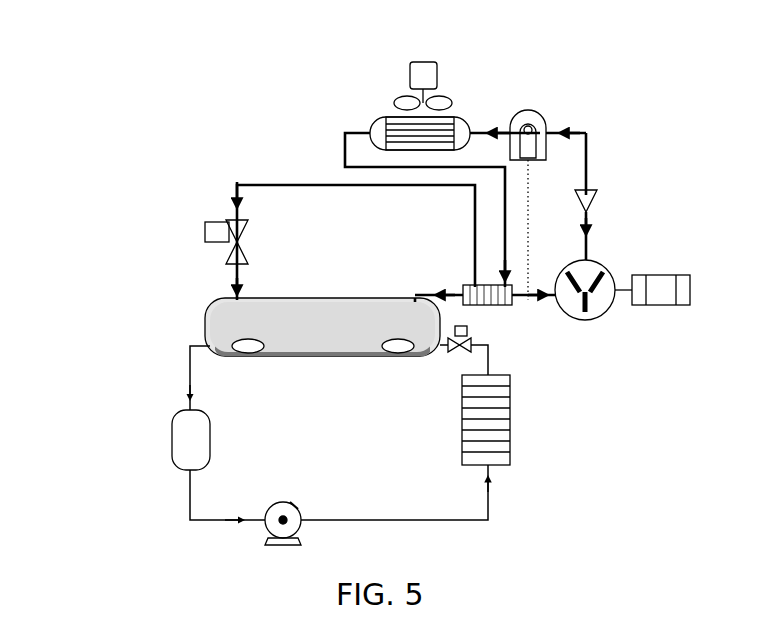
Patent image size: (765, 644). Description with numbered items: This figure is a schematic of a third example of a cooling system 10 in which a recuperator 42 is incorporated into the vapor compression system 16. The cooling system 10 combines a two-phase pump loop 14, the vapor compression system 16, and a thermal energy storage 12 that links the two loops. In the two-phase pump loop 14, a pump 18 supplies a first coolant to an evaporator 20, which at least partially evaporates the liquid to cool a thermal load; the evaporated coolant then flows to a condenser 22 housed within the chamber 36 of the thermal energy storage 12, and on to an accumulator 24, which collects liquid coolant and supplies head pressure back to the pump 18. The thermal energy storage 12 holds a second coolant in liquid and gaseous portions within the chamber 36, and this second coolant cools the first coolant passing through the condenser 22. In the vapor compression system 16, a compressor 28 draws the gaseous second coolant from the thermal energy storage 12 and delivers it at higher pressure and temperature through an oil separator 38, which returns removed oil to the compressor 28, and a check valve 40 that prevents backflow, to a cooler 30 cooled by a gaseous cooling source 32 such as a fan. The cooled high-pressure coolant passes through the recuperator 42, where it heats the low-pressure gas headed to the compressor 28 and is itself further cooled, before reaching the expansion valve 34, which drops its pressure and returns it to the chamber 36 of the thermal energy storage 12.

The cooling system 10 is at (83, 148).
The thermal energy storage 12 is at (202, 315).
The two-phase pump loop 14 is at (174, 514).
The vapor compression system 16 is at (293, 146).
The pump 18 is at (304, 524).
The evaporator 20 is at (510, 463).
The condenser 22 is at (244, 356).
The accumulator 24 is at (172, 447).
The compressor 28 is at (616, 311).
The cooler 30 is at (462, 118).
The gaseous cooling source 32 is at (434, 68).
The expansion valve 34 is at (206, 225).
The chamber 36 is at (336, 333).
The oil separator 38 is at (548, 112).
The check valve 40 is at (600, 197).
The recuperator 42 is at (465, 283).